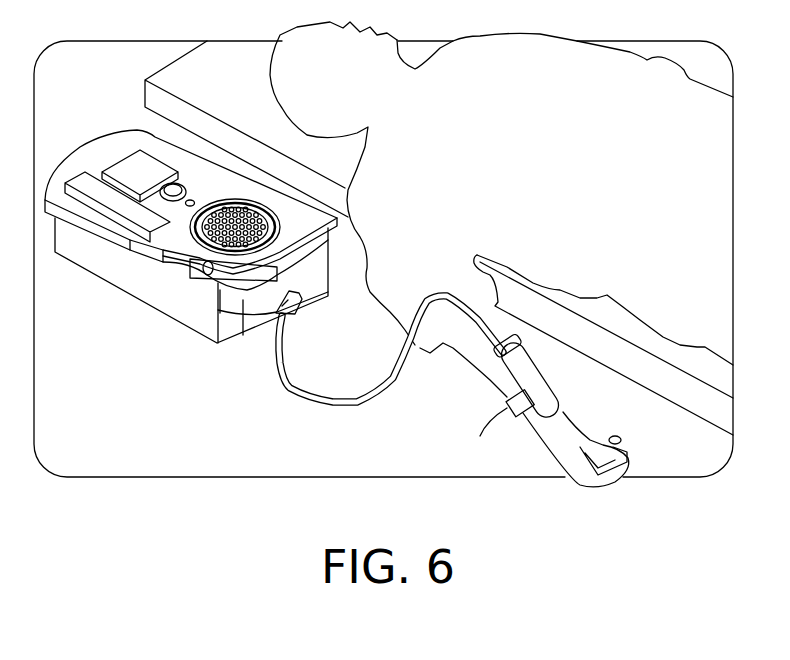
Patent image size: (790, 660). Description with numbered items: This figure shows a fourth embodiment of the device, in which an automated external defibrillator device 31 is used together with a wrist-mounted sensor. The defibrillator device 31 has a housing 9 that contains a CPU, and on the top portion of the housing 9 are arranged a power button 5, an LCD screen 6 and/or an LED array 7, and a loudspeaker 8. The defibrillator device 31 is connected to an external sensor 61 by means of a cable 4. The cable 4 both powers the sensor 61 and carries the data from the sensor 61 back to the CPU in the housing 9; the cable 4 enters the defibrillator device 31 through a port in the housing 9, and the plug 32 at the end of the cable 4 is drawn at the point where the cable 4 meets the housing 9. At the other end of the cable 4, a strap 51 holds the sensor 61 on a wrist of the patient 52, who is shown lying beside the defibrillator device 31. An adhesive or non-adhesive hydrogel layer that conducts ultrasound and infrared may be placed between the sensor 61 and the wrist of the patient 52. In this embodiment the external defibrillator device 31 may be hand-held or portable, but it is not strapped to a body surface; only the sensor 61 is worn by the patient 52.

The cable 4 is at (333, 397).
The power button 5 is at (172, 186).
The LCD screen 6 is at (130, 165).
The LED array 7 is at (105, 203).
The loudspeaker 8 is at (203, 267).
The housing 9 is at (217, 343).
The automated external defibrillator device 31 is at (119, 316).
The plug 32 is at (280, 322).
The strap 51 is at (508, 410).
The patient 52 is at (270, 73).
The external sensor 61 is at (543, 372).